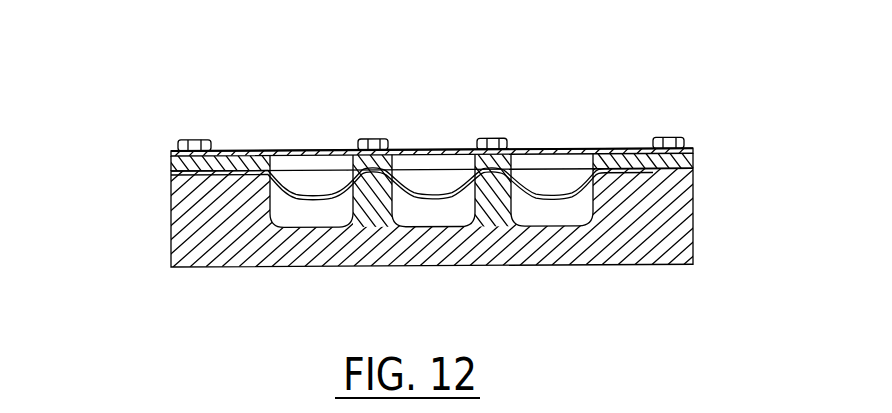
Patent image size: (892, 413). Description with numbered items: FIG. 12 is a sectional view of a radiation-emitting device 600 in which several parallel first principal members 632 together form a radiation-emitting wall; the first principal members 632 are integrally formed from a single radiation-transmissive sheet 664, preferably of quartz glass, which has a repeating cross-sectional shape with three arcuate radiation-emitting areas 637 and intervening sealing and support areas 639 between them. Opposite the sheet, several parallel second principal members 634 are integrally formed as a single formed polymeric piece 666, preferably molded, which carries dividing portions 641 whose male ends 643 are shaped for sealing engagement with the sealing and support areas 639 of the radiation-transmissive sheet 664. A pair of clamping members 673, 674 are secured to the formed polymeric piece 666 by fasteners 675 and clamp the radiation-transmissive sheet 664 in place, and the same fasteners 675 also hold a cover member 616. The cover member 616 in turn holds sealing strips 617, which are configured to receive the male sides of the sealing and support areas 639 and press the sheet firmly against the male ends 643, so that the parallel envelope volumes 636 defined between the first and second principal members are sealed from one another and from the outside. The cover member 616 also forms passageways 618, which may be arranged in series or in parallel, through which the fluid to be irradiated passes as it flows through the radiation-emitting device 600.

The radiation-emitting device 600 is at (672, 279).
The cover member 616 is at (287, 155).
The sealing strips 617 is at (496, 160).
The passageways 618 is at (311, 176).
The first principal members 632 is at (297, 160).
The second principal members 634 is at (275, 243).
The envelope volumes 636 is at (313, 218).
The radiation-emitting areas 637 is at (332, 189).
The sealing and support areas 639 is at (392, 175).
The dividing portions 641 is at (375, 190).
The male ends 643 is at (478, 152).
The radiation-transmissive sheet 664 is at (589, 162).
The formed polymeric piece 666 is at (677, 210).
The clamping member 673 is at (693, 155).
The clamping member 674 is at (171, 162).
The fasteners 675 is at (195, 140).